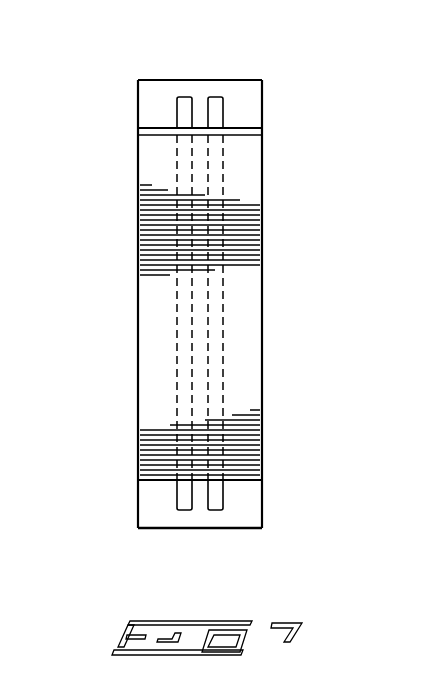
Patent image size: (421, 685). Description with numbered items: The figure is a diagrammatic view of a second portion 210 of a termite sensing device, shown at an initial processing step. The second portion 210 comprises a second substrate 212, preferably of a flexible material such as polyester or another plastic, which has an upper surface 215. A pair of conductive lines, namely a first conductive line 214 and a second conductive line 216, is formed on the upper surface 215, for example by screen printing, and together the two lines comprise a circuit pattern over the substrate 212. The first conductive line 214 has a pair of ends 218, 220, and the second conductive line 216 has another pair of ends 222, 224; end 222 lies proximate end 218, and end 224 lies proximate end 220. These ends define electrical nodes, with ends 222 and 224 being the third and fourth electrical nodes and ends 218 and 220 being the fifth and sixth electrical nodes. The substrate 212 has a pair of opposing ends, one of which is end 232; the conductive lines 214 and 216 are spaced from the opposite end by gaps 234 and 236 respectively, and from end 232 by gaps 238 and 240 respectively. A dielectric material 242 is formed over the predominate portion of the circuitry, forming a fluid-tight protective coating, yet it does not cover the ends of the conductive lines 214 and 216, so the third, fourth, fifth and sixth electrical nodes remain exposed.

The second portion 210 is at (99, 246).
The second substrate 212 is at (247, 120).
The first conductive line 214 is at (177, 493).
The upper surface 215 is at (152, 99).
The second conductive line 216 is at (223, 495).
The end of first conductive line 218 is at (171, 504).
The end of first conductive line 220 is at (176, 109).
The end of second conductive line 222 is at (229, 504).
The end of second conductive line 224 is at (226, 108).
The end of substrate 232 is at (207, 36).
The gap 234 is at (179, 81).
The gap 236 is at (216, 80).
The gap 238 is at (178, 523).
The gap 240 is at (222, 523).
The dielectric material 242 is at (246, 337).